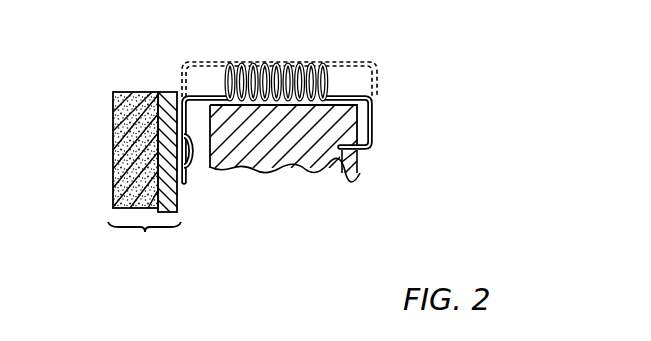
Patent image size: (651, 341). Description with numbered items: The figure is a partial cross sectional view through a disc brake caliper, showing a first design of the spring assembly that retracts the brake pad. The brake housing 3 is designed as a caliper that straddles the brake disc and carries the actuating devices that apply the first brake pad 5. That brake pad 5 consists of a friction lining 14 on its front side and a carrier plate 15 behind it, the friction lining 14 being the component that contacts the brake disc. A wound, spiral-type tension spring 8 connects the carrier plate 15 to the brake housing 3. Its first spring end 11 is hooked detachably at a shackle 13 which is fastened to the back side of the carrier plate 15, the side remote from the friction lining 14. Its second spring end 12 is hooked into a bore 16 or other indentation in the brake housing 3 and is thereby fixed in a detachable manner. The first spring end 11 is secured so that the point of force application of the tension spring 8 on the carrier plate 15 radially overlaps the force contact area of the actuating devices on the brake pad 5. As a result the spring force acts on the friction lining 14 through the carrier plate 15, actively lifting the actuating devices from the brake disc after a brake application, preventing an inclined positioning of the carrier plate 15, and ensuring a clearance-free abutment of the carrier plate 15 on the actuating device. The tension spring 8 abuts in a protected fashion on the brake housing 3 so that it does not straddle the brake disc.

The brake housing 3 is at (305, 160).
The first brake pad 5 is at (144, 239).
The tension spring 8 is at (283, 62).
The first spring end 11 is at (237, 168).
The second spring end 12 is at (378, 140).
The shackle 13 is at (196, 160).
The friction lining 14 is at (113, 173).
The carrier plate 15 is at (174, 193).
The bore 16 is at (358, 172).